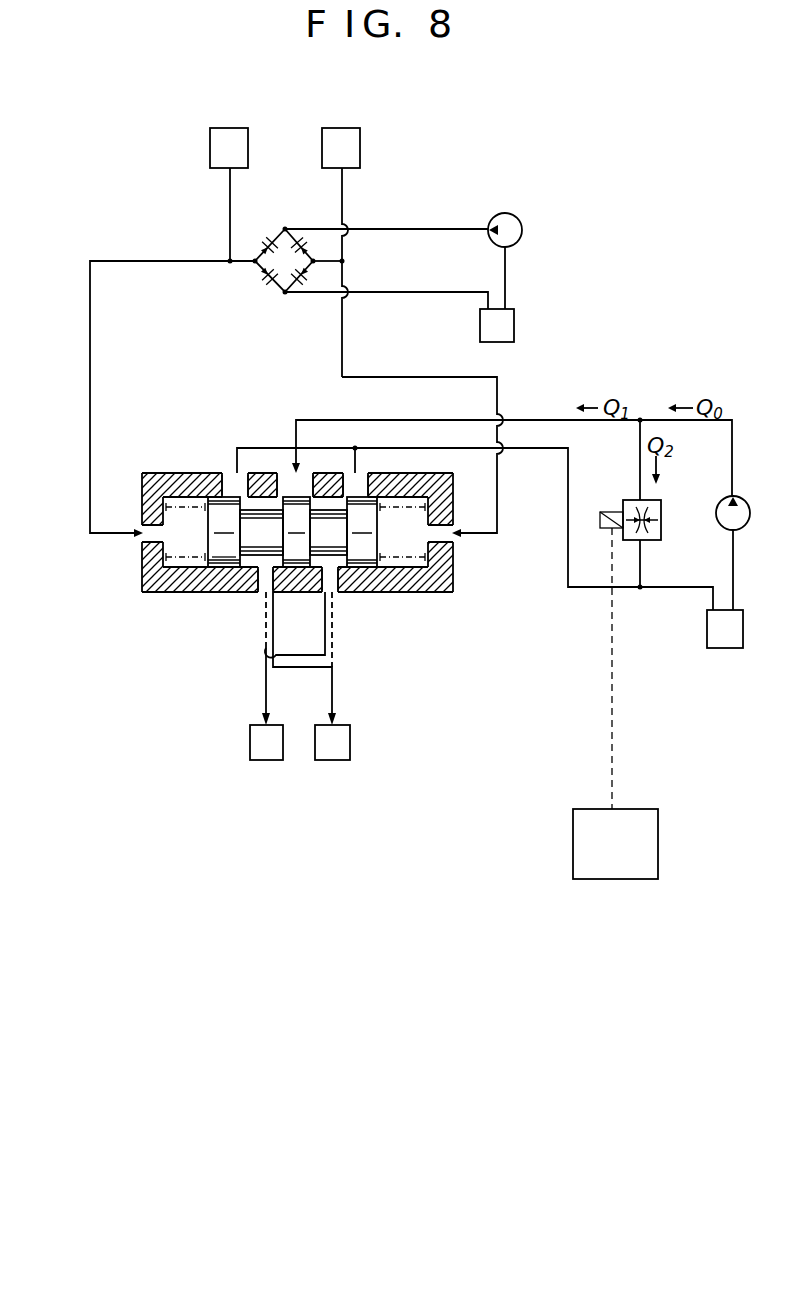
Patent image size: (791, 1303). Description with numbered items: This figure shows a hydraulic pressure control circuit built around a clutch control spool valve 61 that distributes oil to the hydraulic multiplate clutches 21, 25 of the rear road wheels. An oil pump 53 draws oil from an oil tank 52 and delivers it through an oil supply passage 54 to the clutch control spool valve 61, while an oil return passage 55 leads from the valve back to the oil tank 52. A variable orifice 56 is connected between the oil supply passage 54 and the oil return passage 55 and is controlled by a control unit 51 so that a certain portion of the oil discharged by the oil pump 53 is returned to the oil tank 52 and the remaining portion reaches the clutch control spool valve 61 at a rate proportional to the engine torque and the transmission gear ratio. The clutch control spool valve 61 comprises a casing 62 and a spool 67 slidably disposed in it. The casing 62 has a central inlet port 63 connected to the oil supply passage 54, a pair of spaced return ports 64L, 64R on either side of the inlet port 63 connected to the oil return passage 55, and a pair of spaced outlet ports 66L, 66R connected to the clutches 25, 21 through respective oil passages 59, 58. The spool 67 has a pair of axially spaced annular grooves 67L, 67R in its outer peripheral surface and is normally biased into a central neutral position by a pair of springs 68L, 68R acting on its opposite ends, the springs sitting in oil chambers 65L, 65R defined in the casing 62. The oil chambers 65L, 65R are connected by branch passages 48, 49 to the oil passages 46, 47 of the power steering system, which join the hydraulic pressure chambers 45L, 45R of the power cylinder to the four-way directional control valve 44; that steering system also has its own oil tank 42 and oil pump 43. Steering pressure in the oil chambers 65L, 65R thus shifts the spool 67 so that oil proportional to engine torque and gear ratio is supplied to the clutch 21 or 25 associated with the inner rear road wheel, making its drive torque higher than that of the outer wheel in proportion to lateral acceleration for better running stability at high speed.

The hydraulic multiplate clutch 21 is at (266, 742).
The hydraulic multiplate clutch 25 is at (332, 742).
The oil tank 42 is at (514, 339).
The oil pump 43 is at (519, 221).
The four-way directional control valve 44 is at (262, 300).
The hydraulic pressure chamber of the power cylinder 45L is at (229, 148).
The hydraulic pressure chamber of the power cylinder 45R is at (340, 148).
The oil passage 46 is at (230, 211).
The oil passage 47 is at (344, 207).
The branch passage 48 is at (89, 387).
The branch passage 49 is at (503, 390).
The control unit 51 is at (617, 883).
The oil tank 52 is at (733, 650).
The oil pump 53 is at (750, 513).
The oil supply passage 54 is at (296, 420).
The oil return passage 55 is at (567, 557).
The variable orifice 56 is at (662, 516).
The oil passage 58 is at (264, 679).
The oil passage 59 is at (334, 679).
The clutch control spool valve 61 is at (148, 601).
The casing 62 is at (302, 586).
The central inlet port 63 is at (298, 486).
The return port 64L is at (231, 481).
The return port 64R is at (366, 484).
The oil chamber 65L is at (186, 532).
The oil chamber 65R is at (402, 532).
The outlet port 66L is at (262, 594).
The outlet port 66R is at (333, 598).
The spool 67 is at (222, 572).
The annular groove 67L is at (265, 508).
The annular groove 67R is at (335, 497).
The spring 68L is at (167, 480).
The spring 68R is at (417, 572).